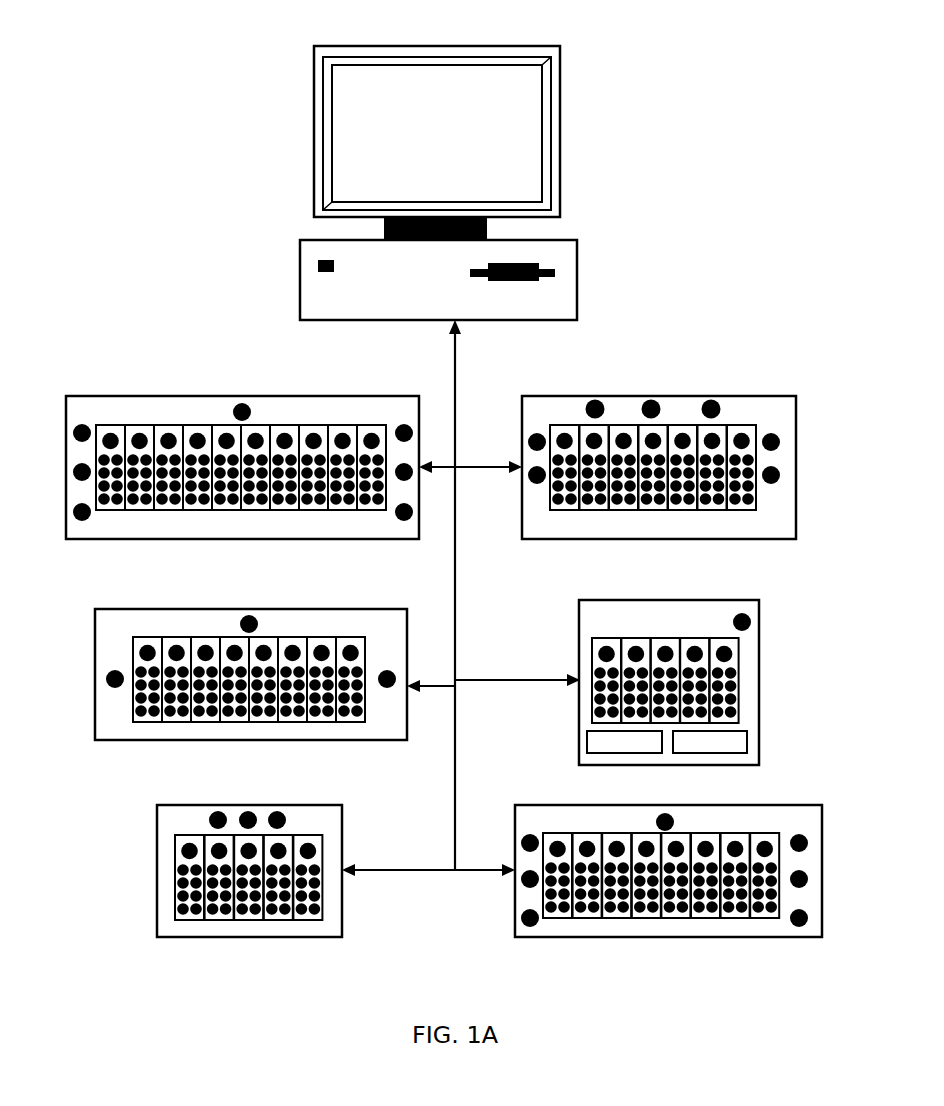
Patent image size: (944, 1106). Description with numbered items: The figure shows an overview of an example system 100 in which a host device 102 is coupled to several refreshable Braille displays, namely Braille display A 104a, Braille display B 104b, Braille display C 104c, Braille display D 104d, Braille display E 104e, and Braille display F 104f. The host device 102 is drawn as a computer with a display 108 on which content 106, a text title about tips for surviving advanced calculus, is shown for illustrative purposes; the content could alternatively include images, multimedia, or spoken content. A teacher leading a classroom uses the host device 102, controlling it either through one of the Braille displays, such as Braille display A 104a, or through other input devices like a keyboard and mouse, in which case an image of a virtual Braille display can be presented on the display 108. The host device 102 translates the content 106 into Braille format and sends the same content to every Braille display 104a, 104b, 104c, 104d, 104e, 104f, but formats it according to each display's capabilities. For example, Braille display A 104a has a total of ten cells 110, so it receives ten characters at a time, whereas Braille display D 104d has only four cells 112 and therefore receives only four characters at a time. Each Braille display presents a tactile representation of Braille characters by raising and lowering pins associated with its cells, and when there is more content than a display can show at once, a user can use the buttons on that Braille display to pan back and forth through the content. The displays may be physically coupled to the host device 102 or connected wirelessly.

The system 100 is at (103, 64).
The host device 102 is at (313, 101).
The Braille display A 104a is at (177, 396).
The Braille display B 104b is at (730, 396).
The Braille display C 104c is at (122, 740).
The Braille display D 104d is at (759, 642).
The Braille display E 104e is at (183, 937).
The Braille display F 104f is at (733, 937).
The content 106 is at (478, 110).
The display 108 is at (542, 175).
The cells 110 is at (380, 510).
The cells 112 is at (598, 633).